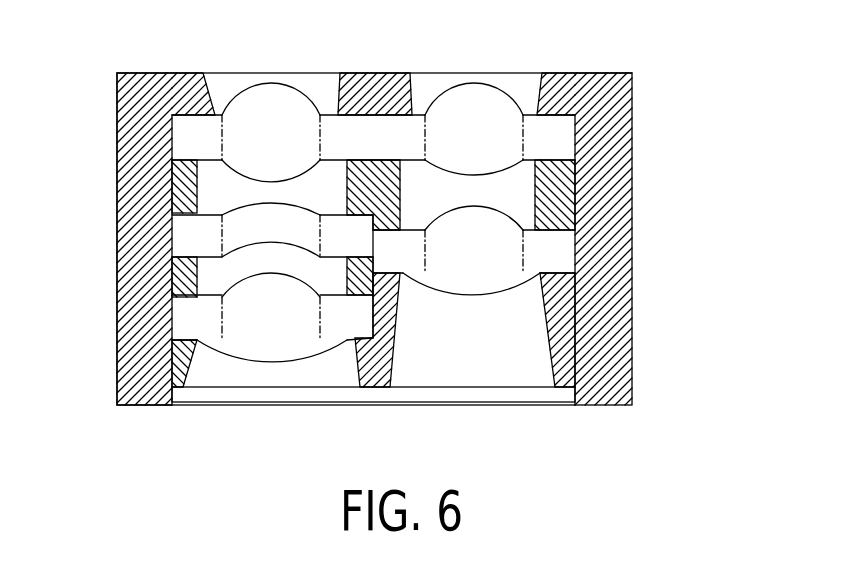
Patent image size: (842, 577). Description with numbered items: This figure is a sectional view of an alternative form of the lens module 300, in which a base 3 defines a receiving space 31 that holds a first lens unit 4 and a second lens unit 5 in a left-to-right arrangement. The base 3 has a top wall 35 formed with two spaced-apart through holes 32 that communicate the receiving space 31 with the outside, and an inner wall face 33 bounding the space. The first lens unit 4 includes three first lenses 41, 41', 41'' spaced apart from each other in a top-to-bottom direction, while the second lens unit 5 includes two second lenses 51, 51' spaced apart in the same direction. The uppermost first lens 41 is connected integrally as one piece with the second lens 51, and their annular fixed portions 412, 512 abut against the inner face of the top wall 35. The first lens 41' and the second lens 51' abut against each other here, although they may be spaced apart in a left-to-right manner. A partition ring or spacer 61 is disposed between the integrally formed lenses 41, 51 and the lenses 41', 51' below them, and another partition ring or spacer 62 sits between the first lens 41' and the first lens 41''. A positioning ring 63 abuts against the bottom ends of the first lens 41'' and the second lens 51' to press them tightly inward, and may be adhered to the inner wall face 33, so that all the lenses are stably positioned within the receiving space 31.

The lens module 300 is at (624, 68).
The base 3 is at (128, 67).
The top wall 35 is at (118, 103).
The through holes 32 is at (222, 73).
The inner wall face 33 is at (172, 380).
The first lens unit 4 is at (312, 77).
The second lens unit 5 is at (437, 77).
The fixed portion 412 is at (183, 141).
The fixed portion 512 is at (565, 138).
The first lens 41 is at (215, 191).
The partition ring 61 is at (172, 203).
The first lens 41' is at (215, 276).
The partition ring 62 is at (172, 300).
The first lens 41'' is at (215, 341).
The receiving space 31 is at (310, 363).
The second lens 51 is at (536, 195).
The second lens 51' is at (539, 295).
The positioning ring 63 is at (553, 360).